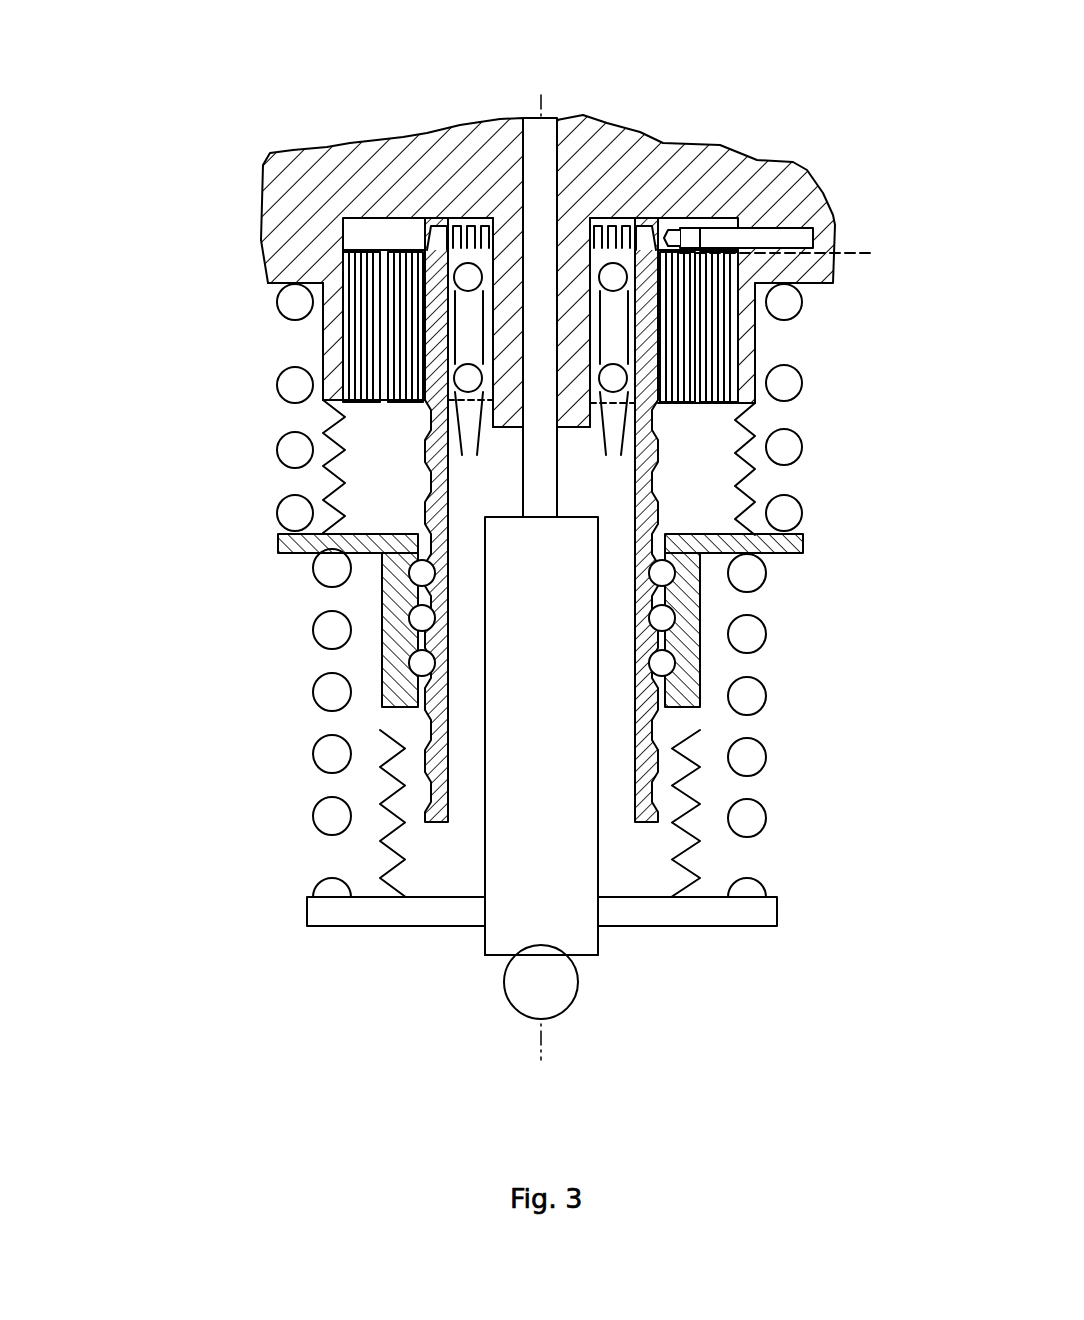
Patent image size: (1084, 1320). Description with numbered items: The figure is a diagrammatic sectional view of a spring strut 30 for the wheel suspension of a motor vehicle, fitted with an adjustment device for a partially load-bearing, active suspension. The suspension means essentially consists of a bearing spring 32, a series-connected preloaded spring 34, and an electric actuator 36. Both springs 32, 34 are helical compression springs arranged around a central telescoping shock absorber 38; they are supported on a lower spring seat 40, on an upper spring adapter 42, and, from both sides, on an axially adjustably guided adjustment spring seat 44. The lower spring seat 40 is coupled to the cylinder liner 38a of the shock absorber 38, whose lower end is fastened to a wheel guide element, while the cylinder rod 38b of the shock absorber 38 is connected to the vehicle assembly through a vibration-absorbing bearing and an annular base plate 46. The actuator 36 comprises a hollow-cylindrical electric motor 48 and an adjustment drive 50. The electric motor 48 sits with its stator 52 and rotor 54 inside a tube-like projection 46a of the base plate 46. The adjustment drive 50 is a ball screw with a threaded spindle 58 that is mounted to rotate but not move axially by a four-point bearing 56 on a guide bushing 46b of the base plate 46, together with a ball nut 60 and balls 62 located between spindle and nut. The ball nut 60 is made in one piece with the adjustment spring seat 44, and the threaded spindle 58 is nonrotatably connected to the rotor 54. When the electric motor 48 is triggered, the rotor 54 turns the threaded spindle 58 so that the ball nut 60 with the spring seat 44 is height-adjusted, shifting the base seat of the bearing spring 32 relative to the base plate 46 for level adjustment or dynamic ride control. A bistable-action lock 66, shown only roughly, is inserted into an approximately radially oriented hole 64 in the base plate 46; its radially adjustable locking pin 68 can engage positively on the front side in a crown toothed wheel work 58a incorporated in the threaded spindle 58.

The spring strut 30 is at (168, 683).
The bearing spring 32 is at (316, 693).
The preloaded spring 34 is at (277, 317).
The electric actuator 36 is at (374, 424).
The telescoping shock absorber 38 is at (605, 866).
The cylinder liner 38a is at (575, 906).
The cylinder rod 38b is at (558, 128).
The lower spring seat 40 is at (705, 927).
The upper spring adapter 42 is at (268, 285).
The adjustment spring seat 44 is at (772, 557).
The annular base plate 46 is at (383, 132).
The tube-like projection 46a is at (323, 345).
The guide bushing 46b is at (606, 405).
The electric motor 48 is at (740, 300).
The adjustment drive 50 is at (382, 587).
The stator 52 is at (757, 368).
The rotor 54 is at (678, 405).
The four-point bearing 56 is at (541, 376).
The threaded spindle 58 is at (640, 709).
The crown toothed wheel work 58a is at (425, 236).
The ball nut 60 is at (700, 663).
The balls 62 is at (640, 622).
The hole 64 is at (708, 250).
The bistable-action lock 66 is at (725, 240).
The locking pin 68 is at (670, 228).